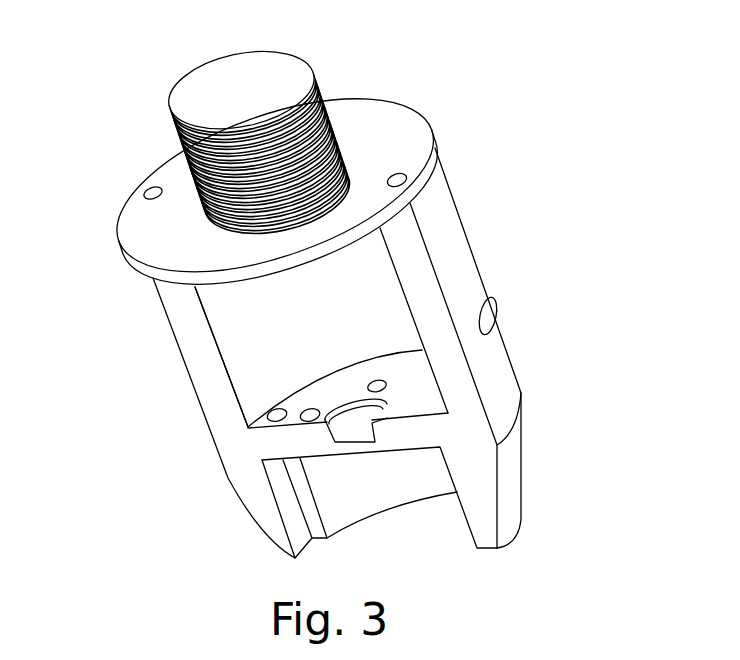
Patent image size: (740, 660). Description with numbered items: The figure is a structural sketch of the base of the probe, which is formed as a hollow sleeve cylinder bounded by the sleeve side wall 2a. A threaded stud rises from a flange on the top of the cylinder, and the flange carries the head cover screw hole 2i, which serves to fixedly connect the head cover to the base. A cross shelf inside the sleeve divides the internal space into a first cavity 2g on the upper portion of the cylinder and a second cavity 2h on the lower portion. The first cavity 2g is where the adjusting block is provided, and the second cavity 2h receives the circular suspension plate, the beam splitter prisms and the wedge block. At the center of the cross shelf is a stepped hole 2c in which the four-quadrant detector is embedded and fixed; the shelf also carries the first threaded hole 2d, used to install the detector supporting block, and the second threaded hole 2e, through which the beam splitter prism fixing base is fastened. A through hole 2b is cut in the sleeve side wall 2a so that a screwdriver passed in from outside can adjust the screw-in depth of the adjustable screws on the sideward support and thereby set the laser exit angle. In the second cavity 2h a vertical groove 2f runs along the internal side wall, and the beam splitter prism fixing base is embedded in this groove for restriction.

The sleeve side wall 2a is at (425, 258).
The through hole 2b is at (496, 322).
The stepped hole 2c is at (370, 408).
The first threaded hole 2d is at (368, 387).
The second threaded hole 2e is at (248, 427).
The vertical groove 2f is at (297, 497).
The first cavity 2g is at (283, 322).
The second cavity 2h is at (395, 480).
The head cover screw hole 2i is at (410, 177).